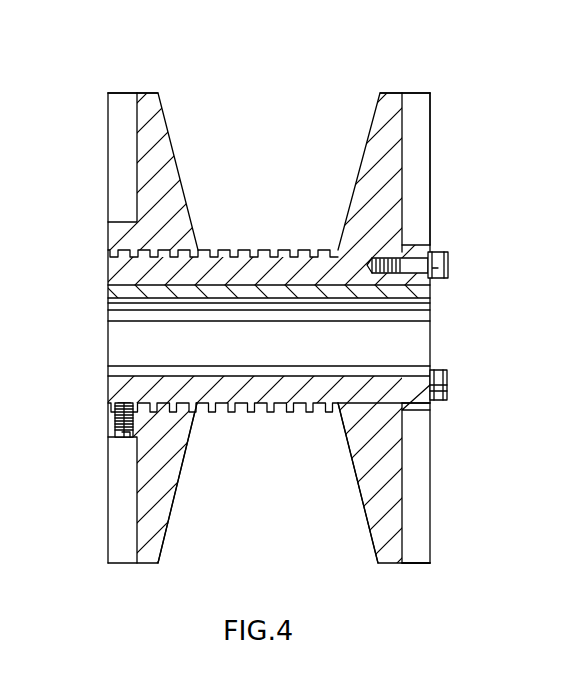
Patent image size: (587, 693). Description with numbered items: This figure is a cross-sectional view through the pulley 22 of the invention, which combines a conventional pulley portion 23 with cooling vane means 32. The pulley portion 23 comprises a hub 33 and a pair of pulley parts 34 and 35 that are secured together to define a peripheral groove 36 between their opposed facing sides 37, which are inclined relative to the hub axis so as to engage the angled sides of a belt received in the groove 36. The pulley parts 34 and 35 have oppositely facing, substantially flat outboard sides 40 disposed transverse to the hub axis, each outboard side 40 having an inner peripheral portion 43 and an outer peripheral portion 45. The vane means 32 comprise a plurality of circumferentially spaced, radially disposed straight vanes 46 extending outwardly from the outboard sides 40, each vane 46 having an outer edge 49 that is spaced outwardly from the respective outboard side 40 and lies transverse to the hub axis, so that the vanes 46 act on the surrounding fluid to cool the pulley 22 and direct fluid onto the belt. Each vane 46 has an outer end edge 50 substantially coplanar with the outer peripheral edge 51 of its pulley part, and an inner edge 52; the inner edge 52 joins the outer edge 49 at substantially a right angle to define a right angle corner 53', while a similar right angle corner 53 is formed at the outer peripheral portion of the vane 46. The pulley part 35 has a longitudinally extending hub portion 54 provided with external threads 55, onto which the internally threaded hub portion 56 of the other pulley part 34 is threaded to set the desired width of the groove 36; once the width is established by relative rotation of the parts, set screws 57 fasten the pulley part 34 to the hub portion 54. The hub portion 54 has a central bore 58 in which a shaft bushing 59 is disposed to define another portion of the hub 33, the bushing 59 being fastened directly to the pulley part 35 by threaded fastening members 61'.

The pulley 22 is at (456, 61).
The pulley portion 23 is at (313, 78).
The vane means 32 is at (103, 177).
The hub 33 is at (269, 230).
The pulley part 34 is at (165, 498).
The pulley part 35 is at (372, 537).
The peripheral groove 36 is at (272, 518).
The facing sides 37 is at (180, 475).
The outboard sides 40 is at (278, 488).
The inner peripheral portion 43 is at (450, 251).
The outer peripheral portion 45 is at (405, 93).
The vanes 46 is at (108, 113).
The outer edge 49 is at (430, 168).
The outer end edge 50 is at (123, 93).
The outer peripheral edge 51 is at (147, 93).
The inner edge 52 is at (447, 378).
The right angle corner 53 is at (455, 328).
The right angle corner 53' is at (469, 400).
The hub portion 54 is at (215, 250).
The external threads 55 is at (255, 250).
The internally threaded hub portion 56 is at (106, 238).
The set screws 57 is at (118, 422).
The central bore 58 is at (163, 376).
The shaft bushing 59 is at (430, 290).
The threaded fastening members 61' is at (481, 270).